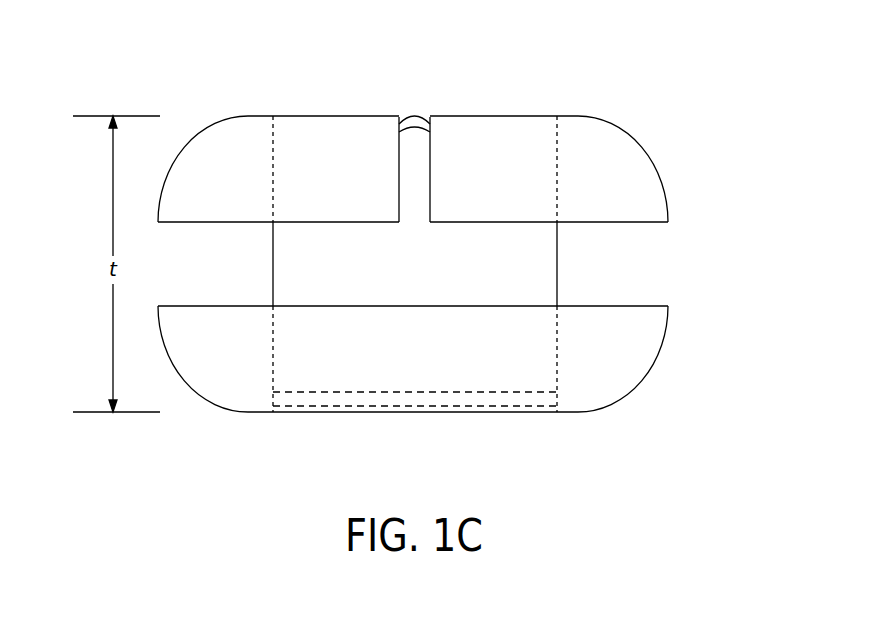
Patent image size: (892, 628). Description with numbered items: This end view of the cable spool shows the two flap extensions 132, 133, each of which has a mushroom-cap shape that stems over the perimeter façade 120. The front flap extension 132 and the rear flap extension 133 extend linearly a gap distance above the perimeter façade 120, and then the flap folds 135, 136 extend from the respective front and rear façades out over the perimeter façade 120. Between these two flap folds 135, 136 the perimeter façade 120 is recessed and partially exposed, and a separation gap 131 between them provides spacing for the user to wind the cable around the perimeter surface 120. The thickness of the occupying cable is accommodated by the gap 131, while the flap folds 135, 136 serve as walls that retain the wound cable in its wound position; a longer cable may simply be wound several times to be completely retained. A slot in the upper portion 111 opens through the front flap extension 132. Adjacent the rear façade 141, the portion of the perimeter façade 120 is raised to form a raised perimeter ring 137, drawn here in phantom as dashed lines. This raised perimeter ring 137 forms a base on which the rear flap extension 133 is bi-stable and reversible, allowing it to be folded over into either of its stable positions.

The top surface of upper cap 111 is at (530, 125).
The perimeter façade 120 is at (557, 266).
The separation gap 131 is at (180, 222).
The front flap extension 132 is at (622, 160).
The rear flap extension 133 is at (628, 368).
The flap fold 135 is at (652, 198).
The flap fold 136 is at (652, 338).
The raised perimeter ring 137 is at (273, 394).
The rear façade 141 is at (283, 412).